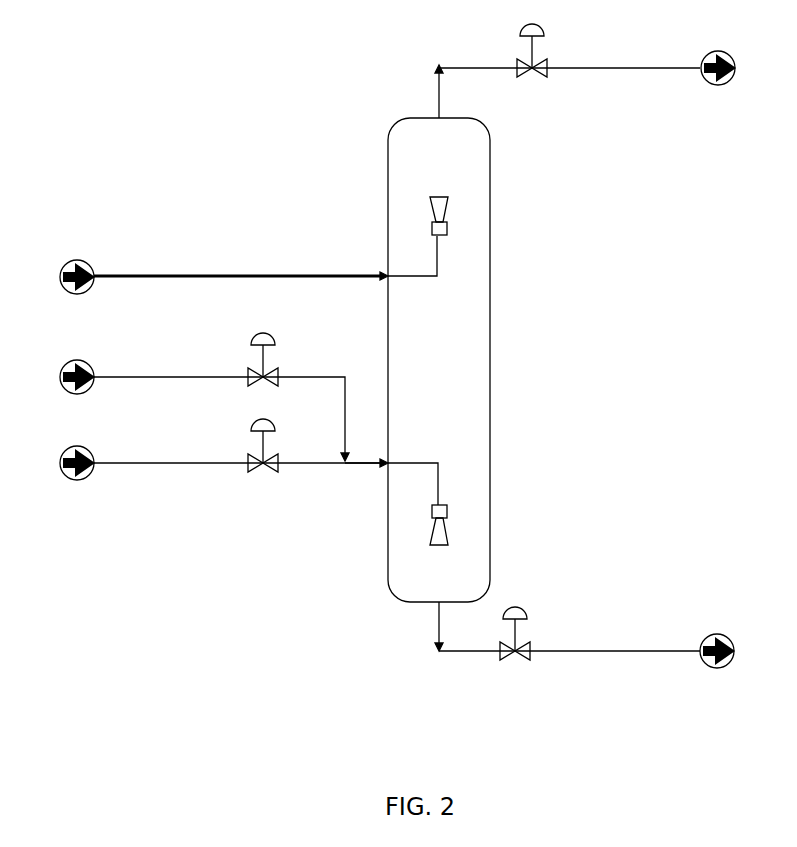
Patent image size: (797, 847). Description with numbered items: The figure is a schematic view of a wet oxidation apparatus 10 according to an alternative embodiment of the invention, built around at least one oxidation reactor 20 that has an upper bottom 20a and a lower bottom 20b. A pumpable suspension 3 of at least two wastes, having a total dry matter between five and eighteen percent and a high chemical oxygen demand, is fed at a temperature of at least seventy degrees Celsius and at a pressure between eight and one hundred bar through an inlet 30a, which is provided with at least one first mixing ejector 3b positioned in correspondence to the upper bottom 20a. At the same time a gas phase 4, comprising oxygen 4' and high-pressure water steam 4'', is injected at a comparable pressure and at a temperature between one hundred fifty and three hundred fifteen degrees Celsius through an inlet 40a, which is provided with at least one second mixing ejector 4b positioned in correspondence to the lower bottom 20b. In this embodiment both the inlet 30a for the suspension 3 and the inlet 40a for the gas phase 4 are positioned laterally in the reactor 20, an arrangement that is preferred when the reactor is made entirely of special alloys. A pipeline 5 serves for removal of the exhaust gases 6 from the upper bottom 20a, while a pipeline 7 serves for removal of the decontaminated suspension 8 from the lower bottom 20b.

The apparatus 10 is at (645, 278).
The oxidation reactor 20 is at (491, 337).
The upper bottom 20a is at (470, 123).
The lower bottom 20b is at (483, 593).
The pumpable suspension 3 is at (208, 277).
The inlet for the suspension 30a is at (388, 272).
The first mixing ejector 3b is at (448, 200).
The oxygen 4' is at (188, 397).
The high-pressure water steam 4'' is at (204, 449).
The gas phase 4 is at (364, 498).
The inlet for the gas phase 40a is at (390, 462).
The second mixing ejector 4b is at (452, 518).
The pipeline 5 is at (632, 63).
The exhaust gases 6 is at (728, 68).
The pipeline 7 is at (613, 651).
The decontaminated suspension 8 is at (729, 651).